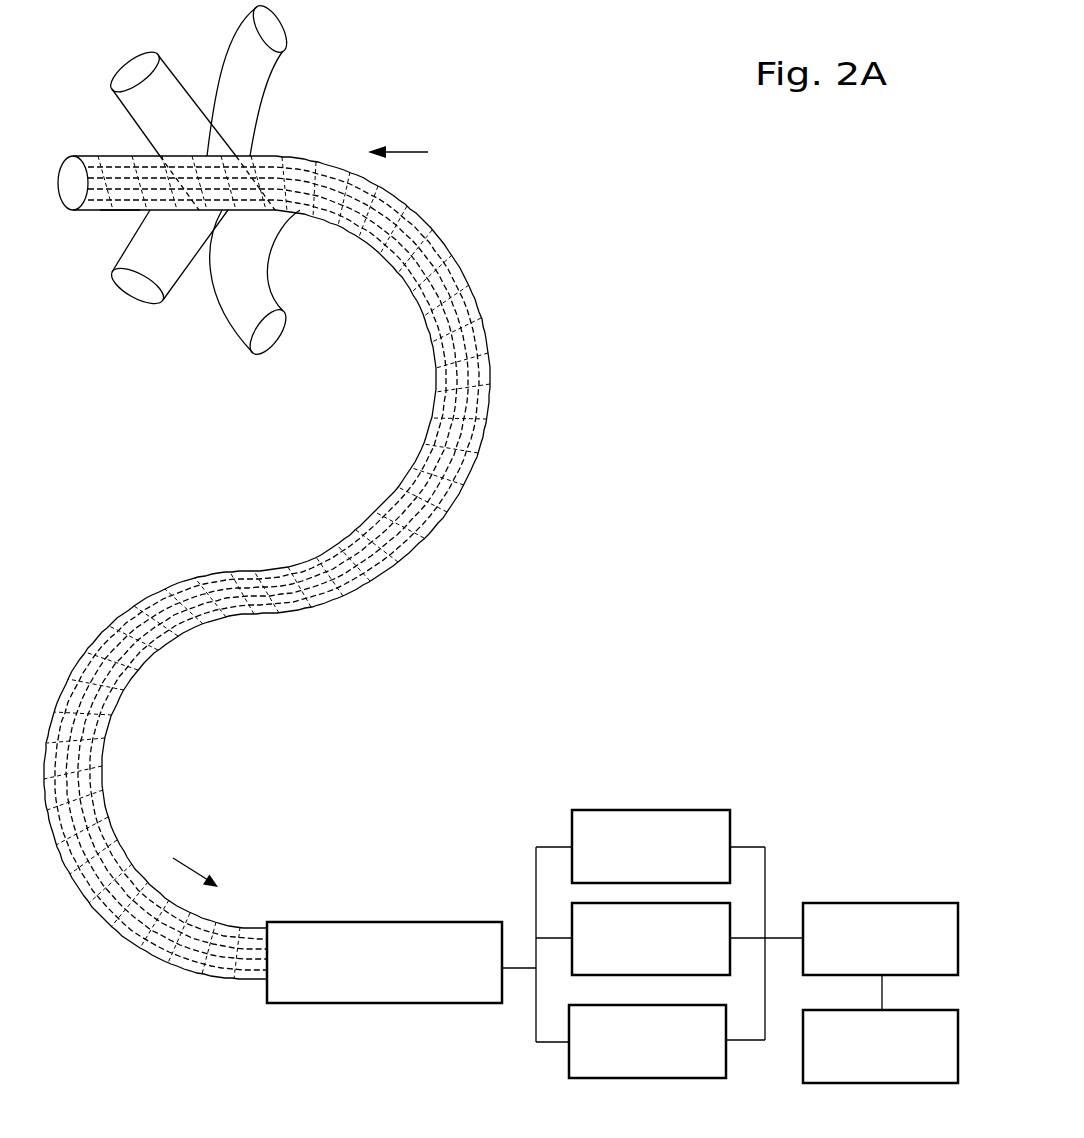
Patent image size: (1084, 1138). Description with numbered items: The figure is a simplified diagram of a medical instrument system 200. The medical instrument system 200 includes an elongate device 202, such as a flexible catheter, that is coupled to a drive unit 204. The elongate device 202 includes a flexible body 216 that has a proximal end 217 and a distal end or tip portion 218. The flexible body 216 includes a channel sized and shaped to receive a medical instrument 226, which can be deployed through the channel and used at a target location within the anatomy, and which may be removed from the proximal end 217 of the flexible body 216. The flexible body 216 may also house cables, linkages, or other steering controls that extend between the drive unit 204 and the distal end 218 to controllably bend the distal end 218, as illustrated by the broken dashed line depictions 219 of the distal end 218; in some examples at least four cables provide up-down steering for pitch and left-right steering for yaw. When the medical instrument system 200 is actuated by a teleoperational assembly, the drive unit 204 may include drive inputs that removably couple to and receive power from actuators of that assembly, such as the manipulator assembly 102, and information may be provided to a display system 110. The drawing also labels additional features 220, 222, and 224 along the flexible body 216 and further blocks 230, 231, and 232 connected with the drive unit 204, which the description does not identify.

The medical instrument system 200 is at (494, 140).
The elongate device 202 is at (482, 298).
The drive unit 204 is at (384, 962).
The flexible body 216 is at (207, 574).
The proximal end 217 is at (238, 1006).
The distal end 218 is at (74, 131).
The broken dashed line depictions 219 is at (133, 62).
The channel 220 is at (105, 211).
The shape sensor 222 is at (484, 374).
The segments 224 is at (450, 510).
The medical instrument 226 is at (434, 402).
The tracking system 230 is at (647, 1041).
The visualization system 231 is at (651, 939).
The navigation system 232 is at (880, 939).
The manipulator assembly 102 is at (651, 846).
The display system 110 is at (880, 1046).